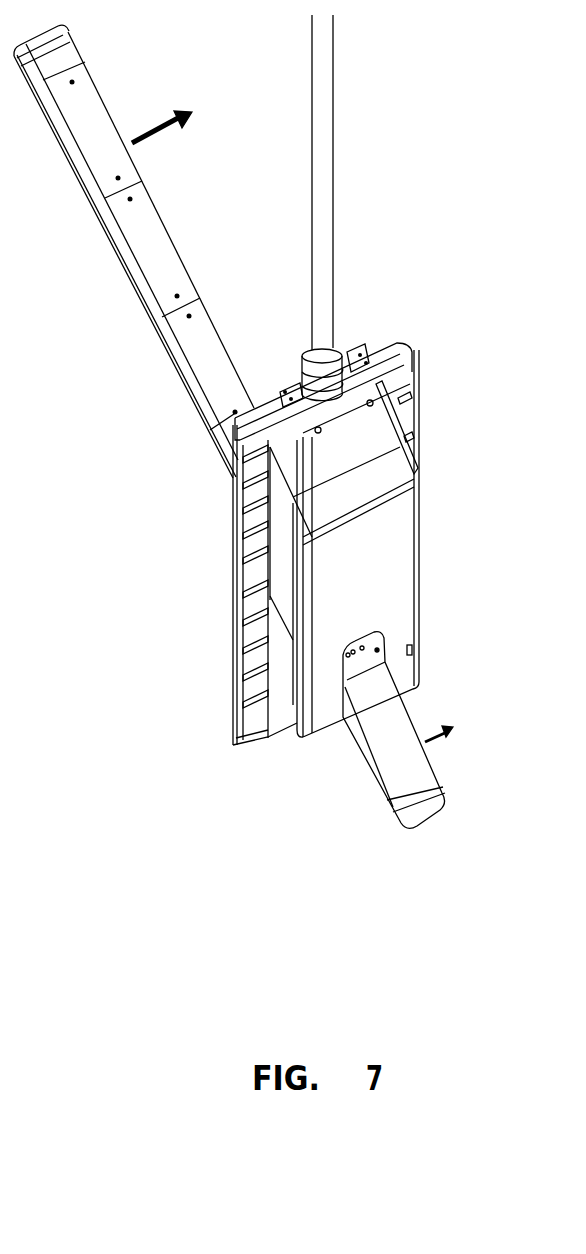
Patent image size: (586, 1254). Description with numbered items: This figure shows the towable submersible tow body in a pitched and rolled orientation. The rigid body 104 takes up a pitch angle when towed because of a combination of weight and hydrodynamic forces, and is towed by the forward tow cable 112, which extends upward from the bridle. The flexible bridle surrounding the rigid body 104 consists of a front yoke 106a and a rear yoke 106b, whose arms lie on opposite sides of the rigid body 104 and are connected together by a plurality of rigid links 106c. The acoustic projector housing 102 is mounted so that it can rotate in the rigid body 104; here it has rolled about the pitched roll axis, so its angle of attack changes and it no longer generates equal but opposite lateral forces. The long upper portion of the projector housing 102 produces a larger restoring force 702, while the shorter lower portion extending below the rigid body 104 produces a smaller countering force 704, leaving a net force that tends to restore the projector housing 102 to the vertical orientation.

The acoustic projector housing 102 is at (67, 47).
The restoring force 702 is at (158, 138).
The forward tow cable 112 is at (320, 196).
The front yoke 106a is at (393, 350).
The rigid links 106c is at (247, 497).
The rigid body 104 is at (393, 512).
The rear yoke 106b is at (265, 715).
The countering force 704 is at (446, 735).